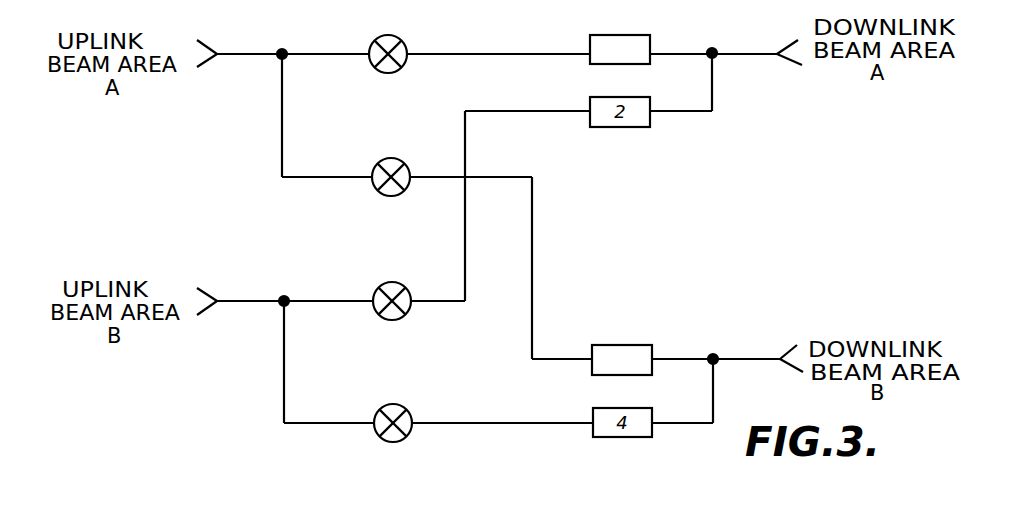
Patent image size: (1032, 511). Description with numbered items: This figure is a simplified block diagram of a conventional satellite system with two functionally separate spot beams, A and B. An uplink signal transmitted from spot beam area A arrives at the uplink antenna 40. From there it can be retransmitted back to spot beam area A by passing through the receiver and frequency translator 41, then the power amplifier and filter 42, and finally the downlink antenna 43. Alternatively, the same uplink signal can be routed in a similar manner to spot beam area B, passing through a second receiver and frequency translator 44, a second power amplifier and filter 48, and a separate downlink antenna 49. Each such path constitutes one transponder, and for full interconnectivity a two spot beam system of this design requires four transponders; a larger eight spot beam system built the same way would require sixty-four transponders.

The uplink antenna 40 is at (213, 46).
The receiver and frequency translator 41 is at (406, 43).
The power amplifier and filter 42 is at (617, 34).
The downlink antenna 43 is at (786, 47).
The receiver and frequency translator 44 is at (378, 189).
The power amplifier and filter 48 is at (652, 346).
The downlink antenna 49 is at (788, 352).